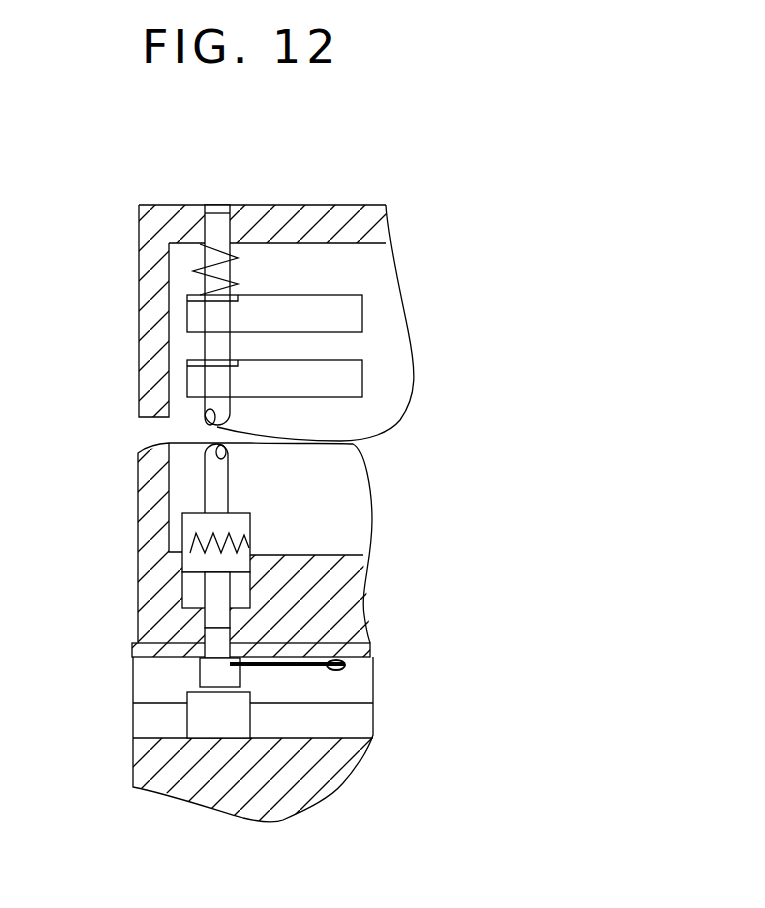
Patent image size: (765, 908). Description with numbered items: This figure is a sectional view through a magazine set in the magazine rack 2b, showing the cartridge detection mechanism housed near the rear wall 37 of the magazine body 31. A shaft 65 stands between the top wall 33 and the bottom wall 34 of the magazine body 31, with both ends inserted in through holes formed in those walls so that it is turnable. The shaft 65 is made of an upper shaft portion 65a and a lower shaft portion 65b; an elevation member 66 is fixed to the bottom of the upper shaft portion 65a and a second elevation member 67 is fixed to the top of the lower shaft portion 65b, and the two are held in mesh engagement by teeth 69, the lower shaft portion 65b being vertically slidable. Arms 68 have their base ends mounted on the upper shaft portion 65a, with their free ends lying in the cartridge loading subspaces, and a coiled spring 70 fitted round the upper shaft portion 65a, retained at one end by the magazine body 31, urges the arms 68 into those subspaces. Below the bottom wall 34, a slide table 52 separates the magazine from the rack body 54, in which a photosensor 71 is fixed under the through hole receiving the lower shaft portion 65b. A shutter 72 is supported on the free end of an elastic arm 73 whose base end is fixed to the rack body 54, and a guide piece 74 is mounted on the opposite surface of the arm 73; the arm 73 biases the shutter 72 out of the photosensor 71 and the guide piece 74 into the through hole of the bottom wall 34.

The magazine rack 2b is at (160, 780).
The magazine body 31 is at (139, 268).
The top wall 33 is at (347, 222).
The bottom wall 34 is at (342, 610).
The rear wall 37 is at (143, 320).
The slide table 52 is at (363, 648).
The rack body 54 is at (307, 806).
The shaft 65 is at (217, 427).
The upper shaft portion 65a is at (203, 483).
The lower shaft portion 65b is at (213, 593).
The elevation member 66 is at (181, 522).
The elevation member 67 is at (181, 568).
The arms 68 is at (350, 308).
The teeth 69 is at (228, 532).
The coiled spring 70 is at (237, 253).
The photosensor 71 is at (220, 727).
The shutter 72 is at (207, 673).
The arm 73 is at (290, 665).
The guide piece 74 is at (210, 637).